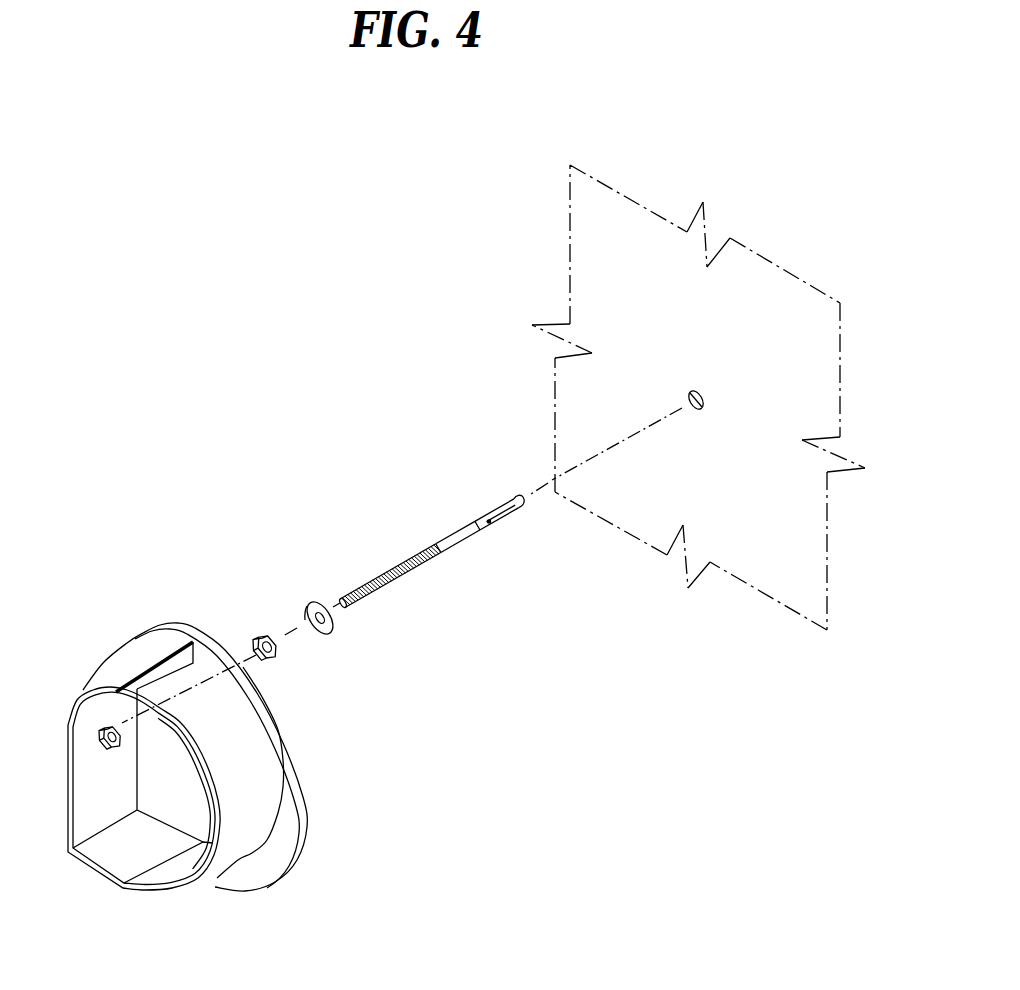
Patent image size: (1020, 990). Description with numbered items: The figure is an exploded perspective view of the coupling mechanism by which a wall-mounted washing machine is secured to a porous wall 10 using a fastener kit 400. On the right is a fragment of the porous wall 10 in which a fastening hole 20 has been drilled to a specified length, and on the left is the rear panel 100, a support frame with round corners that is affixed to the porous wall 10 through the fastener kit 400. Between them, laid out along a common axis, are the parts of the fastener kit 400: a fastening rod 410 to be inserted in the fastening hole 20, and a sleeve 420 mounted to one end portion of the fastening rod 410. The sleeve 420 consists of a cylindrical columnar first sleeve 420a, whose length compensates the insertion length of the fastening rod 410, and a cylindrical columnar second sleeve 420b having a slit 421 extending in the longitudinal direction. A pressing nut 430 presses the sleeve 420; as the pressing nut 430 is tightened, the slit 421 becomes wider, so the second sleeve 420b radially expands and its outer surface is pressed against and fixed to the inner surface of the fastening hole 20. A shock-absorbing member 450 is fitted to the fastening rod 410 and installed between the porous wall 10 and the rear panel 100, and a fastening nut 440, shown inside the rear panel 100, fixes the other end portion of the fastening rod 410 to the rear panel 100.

The porous wall 10 is at (585, 250).
The fastening hole 20 is at (695, 410).
The rear panel 100 is at (267, 863).
The fastener kit 400 is at (443, 415).
The fastening rod 410 is at (372, 585).
The sleeve 420 is at (499, 450).
The first sleeve 420a is at (452, 538).
The second sleeve 420b is at (485, 512).
The slit 421 is at (493, 523).
The pressing nut 430 is at (265, 632).
The fastening nut 440 is at (120, 724).
The shock-absorbing member 450 is at (311, 600).